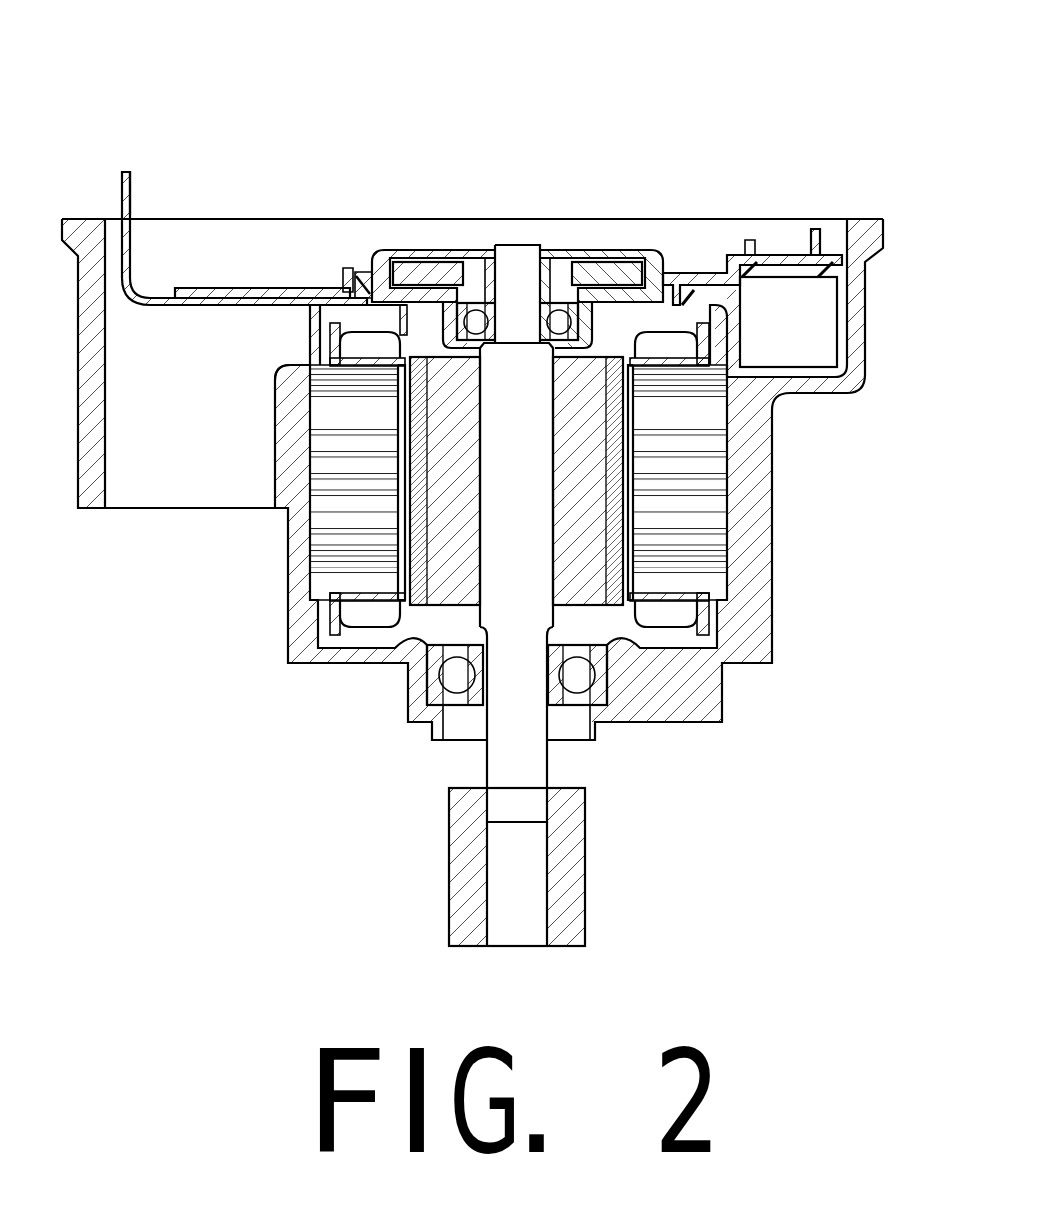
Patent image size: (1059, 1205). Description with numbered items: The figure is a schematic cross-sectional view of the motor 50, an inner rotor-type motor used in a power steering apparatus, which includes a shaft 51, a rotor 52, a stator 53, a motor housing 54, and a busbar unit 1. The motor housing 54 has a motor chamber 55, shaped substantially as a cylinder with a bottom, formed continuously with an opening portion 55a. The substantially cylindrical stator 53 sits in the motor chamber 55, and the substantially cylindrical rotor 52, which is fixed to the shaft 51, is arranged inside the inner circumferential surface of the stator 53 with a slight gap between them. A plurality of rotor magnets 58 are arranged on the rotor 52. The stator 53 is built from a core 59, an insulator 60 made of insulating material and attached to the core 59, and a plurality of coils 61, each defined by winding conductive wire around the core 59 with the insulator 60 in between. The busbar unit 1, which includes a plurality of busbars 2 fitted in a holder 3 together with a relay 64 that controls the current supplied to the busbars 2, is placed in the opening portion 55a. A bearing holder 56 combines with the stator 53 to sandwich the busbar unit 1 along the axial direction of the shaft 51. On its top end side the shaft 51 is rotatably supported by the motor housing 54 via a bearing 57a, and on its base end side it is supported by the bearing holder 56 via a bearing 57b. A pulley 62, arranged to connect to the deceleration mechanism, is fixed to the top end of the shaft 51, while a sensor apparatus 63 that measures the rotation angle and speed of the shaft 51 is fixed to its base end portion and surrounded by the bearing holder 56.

The motor 50 is at (675, 90).
The busbar unit 1 is at (280, 282).
The busbar 2 is at (132, 192).
The holder 3 is at (205, 286).
The shaft 51 is at (485, 762).
The rotor 52 is at (450, 607).
The stator 53 is at (342, 640).
The motor housing 54 is at (150, 512).
The motor chamber 55 is at (655, 652).
The opening portion 55a is at (304, 362).
The bearing holder 56 is at (633, 256).
The bearing 57a is at (597, 707).
The bearing 57b is at (463, 300).
The rotor magnet 58 is at (625, 472).
The core 59 is at (300, 540).
The insulator 60 is at (712, 612).
The coil 61 is at (372, 630).
The pulley 62 is at (587, 892).
The sensor apparatus 63 is at (592, 262).
The relay 64 is at (838, 326).